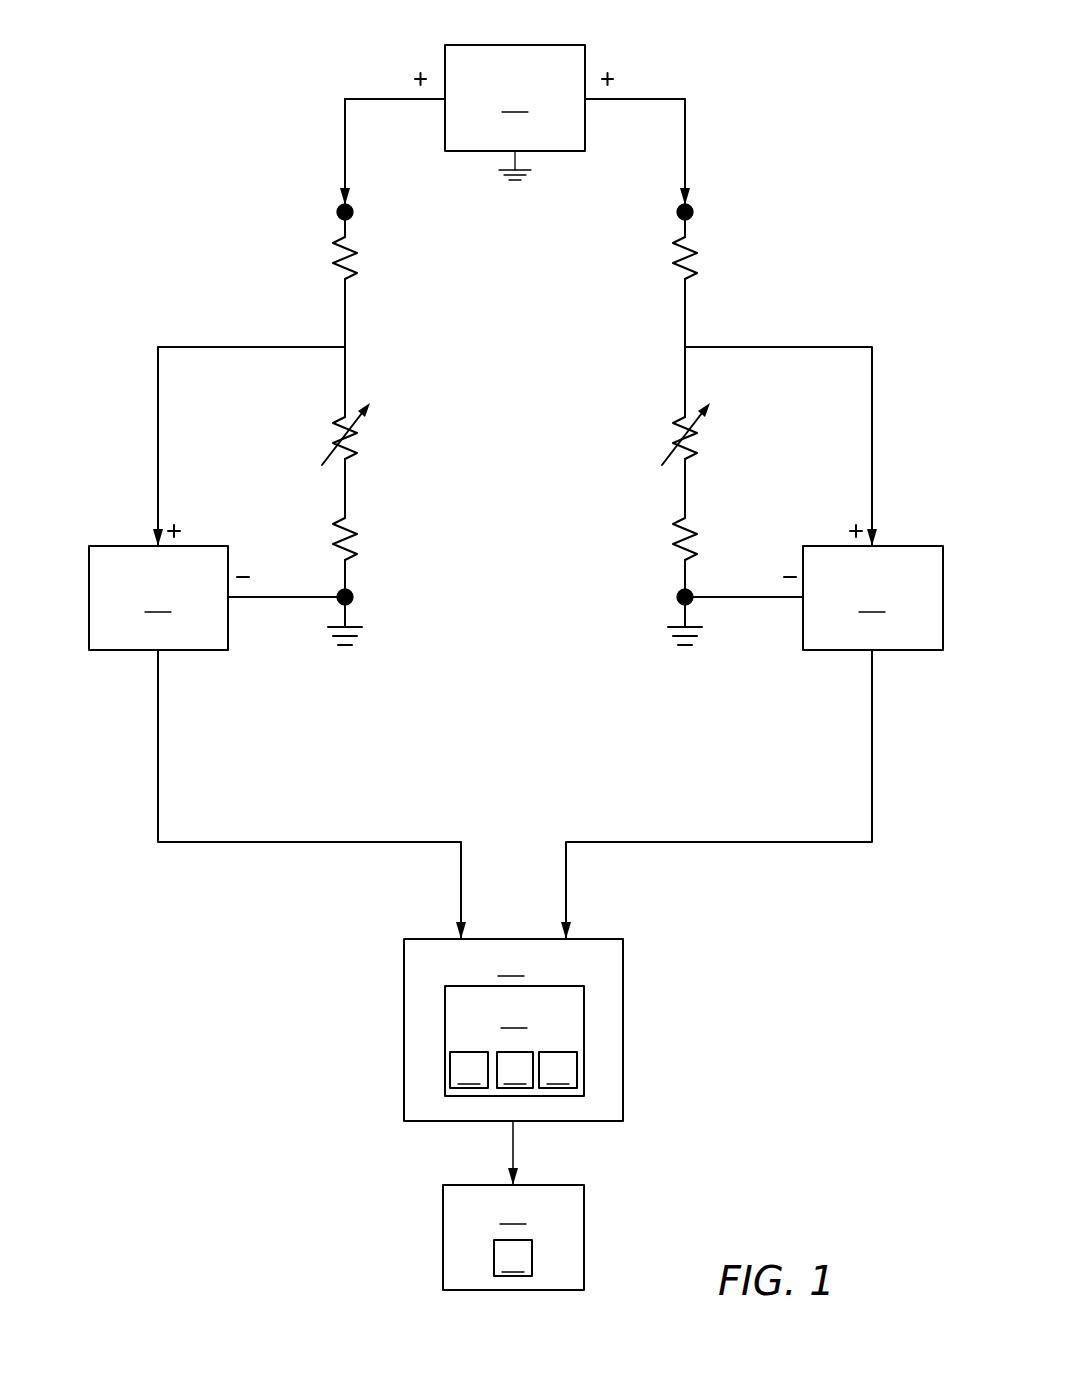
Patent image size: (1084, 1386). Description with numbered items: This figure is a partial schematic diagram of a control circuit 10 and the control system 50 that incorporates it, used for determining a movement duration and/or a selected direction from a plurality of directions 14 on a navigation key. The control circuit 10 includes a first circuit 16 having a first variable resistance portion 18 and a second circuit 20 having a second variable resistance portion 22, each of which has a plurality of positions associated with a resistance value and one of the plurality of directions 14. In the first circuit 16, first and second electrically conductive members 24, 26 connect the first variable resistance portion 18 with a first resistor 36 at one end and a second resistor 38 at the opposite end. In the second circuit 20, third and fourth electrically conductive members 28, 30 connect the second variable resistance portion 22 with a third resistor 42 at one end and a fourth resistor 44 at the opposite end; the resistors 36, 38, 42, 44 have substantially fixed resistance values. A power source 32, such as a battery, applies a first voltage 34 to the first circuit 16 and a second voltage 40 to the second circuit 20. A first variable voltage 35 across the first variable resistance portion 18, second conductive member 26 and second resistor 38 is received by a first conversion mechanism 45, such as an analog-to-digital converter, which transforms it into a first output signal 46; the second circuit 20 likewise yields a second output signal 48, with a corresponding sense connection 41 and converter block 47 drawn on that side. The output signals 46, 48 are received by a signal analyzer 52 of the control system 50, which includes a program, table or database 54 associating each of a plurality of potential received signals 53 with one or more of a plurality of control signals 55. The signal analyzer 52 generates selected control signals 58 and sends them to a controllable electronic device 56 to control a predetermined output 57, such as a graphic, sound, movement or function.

The control circuit 10 is at (158, 147).
The plurality of directions 14 is at (469, 1070).
The first circuit 16 is at (708, 172).
The first variable resistance portion 18 is at (720, 416).
The second circuit 20 is at (306, 174).
The second variable resistance portion 22 is at (387, 420).
The first electrically conductive member 24 is at (647, 329).
The second electrically conductive member 26 is at (665, 486).
The third electrically conductive member 28 is at (376, 319).
The fourth electrically conductive member 30 is at (322, 485).
The power source 32 is at (515, 112).
The first voltage 34 is at (643, 84).
The first variable voltage 35 is at (881, 434).
The first resistor 36 is at (724, 237).
The second resistor 38 is at (715, 516).
The second voltage 40 is at (400, 84).
The first sense wire 41 is at (146, 452).
The third resistor 42 is at (373, 233).
The fourth resistor 44 is at (375, 506).
The first conversion mechanism 45 is at (814, 598).
The first output signal 46 is at (657, 826).
The first amplifier 47 is at (217, 598).
The second output signal 48 is at (343, 826).
The control system 50 is at (278, 983).
The signal analyzer 52 is at (513, 1030).
The plurality of potential received signals 53 is at (515, 1070).
The program, table or database 54 is at (514, 1041).
The plurality of control signals 55 is at (558, 1070).
The controllable electronic device 56 is at (513, 1237).
The predetermined output 57 is at (513, 1258).
The selected control signals 58 is at (531, 1150).